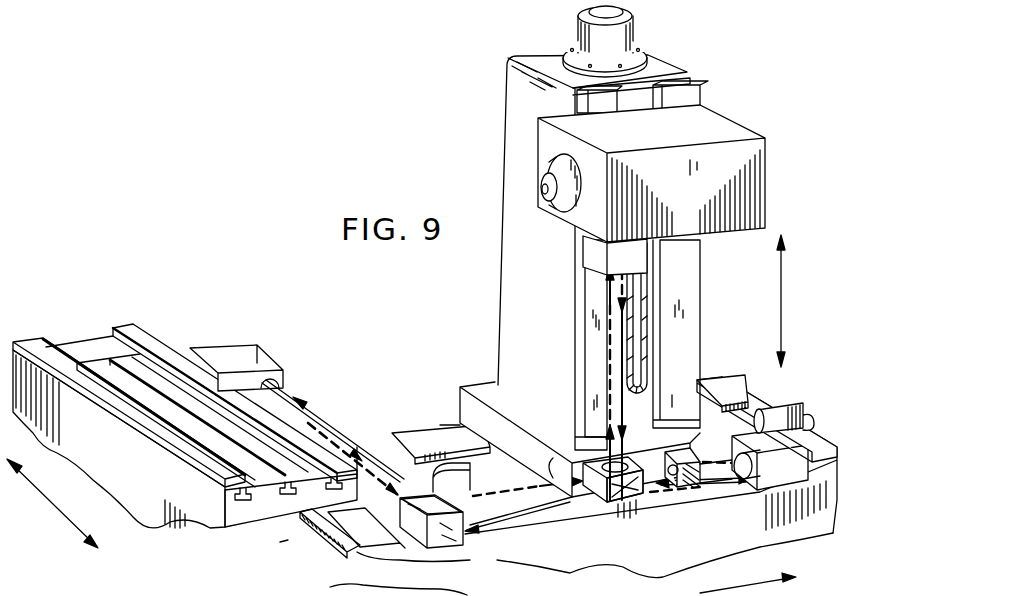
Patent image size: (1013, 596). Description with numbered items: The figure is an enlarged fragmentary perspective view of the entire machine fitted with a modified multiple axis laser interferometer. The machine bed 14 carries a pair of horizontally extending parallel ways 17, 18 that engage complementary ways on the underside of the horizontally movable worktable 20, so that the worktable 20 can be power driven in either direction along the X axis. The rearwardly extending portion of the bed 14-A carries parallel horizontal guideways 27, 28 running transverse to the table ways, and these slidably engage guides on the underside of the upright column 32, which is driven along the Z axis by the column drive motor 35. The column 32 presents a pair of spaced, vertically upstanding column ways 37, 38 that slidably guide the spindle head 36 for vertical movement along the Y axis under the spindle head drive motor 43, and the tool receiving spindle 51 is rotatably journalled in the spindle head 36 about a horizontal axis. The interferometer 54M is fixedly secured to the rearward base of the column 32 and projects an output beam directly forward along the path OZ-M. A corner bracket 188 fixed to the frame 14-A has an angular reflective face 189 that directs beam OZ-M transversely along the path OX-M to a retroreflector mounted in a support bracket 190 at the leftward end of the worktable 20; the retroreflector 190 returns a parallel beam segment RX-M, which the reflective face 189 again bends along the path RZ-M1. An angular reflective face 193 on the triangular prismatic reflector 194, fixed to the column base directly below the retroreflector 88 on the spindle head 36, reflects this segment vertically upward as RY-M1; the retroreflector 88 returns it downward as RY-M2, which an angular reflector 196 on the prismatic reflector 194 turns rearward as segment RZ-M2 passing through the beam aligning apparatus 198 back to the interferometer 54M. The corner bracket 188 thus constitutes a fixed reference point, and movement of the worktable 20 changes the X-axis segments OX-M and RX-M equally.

The machine bed 14 is at (84, 457).
The rearwardly extending portion of the bed 14-A is at (625, 560).
The way 17 is at (33, 343).
The way 18 is at (136, 333).
The worktable 20 is at (172, 360).
The retroreflector support bracket 190 is at (255, 366).
The angular reflective face 189 is at (420, 499).
The corner bracket 188 is at (440, 545).
The bed guideway 27 is at (412, 441).
The bed guideway 28 is at (573, 498).
The angular reflective face 193 is at (610, 503).
The triangular prismatic reflector 194 is at (640, 495).
The angular reflector 196 is at (680, 490).
The beam aligning apparatus 198 is at (707, 480).
The laser interferometer 54M is at (764, 487).
The column drive motor 35 is at (790, 410).
The column 32 is at (510, 278).
The spindle head 36 is at (728, 128).
The column way 37 is at (585, 298).
The column way 38 is at (690, 300).
The retroreflector 88 is at (640, 262).
The spindle head drive motor 43 is at (636, 28).
The tool receiving spindle 51 is at (550, 168).
The return beam segment RX-M is at (294, 398).
The output beam path OX-M is at (308, 423).
The return beam path RZ-M1 is at (545, 486).
The return beam segment RZ-M2 is at (700, 457).
The return beam path RY-M1 is at (600, 366).
The return beam segment RY-M2 is at (630, 408).
The output beam path OZ-M is at (490, 531).
The X axis X is at (55, 497).
The Y axis Y is at (800, 292).
The Z axis Z is at (728, 588).